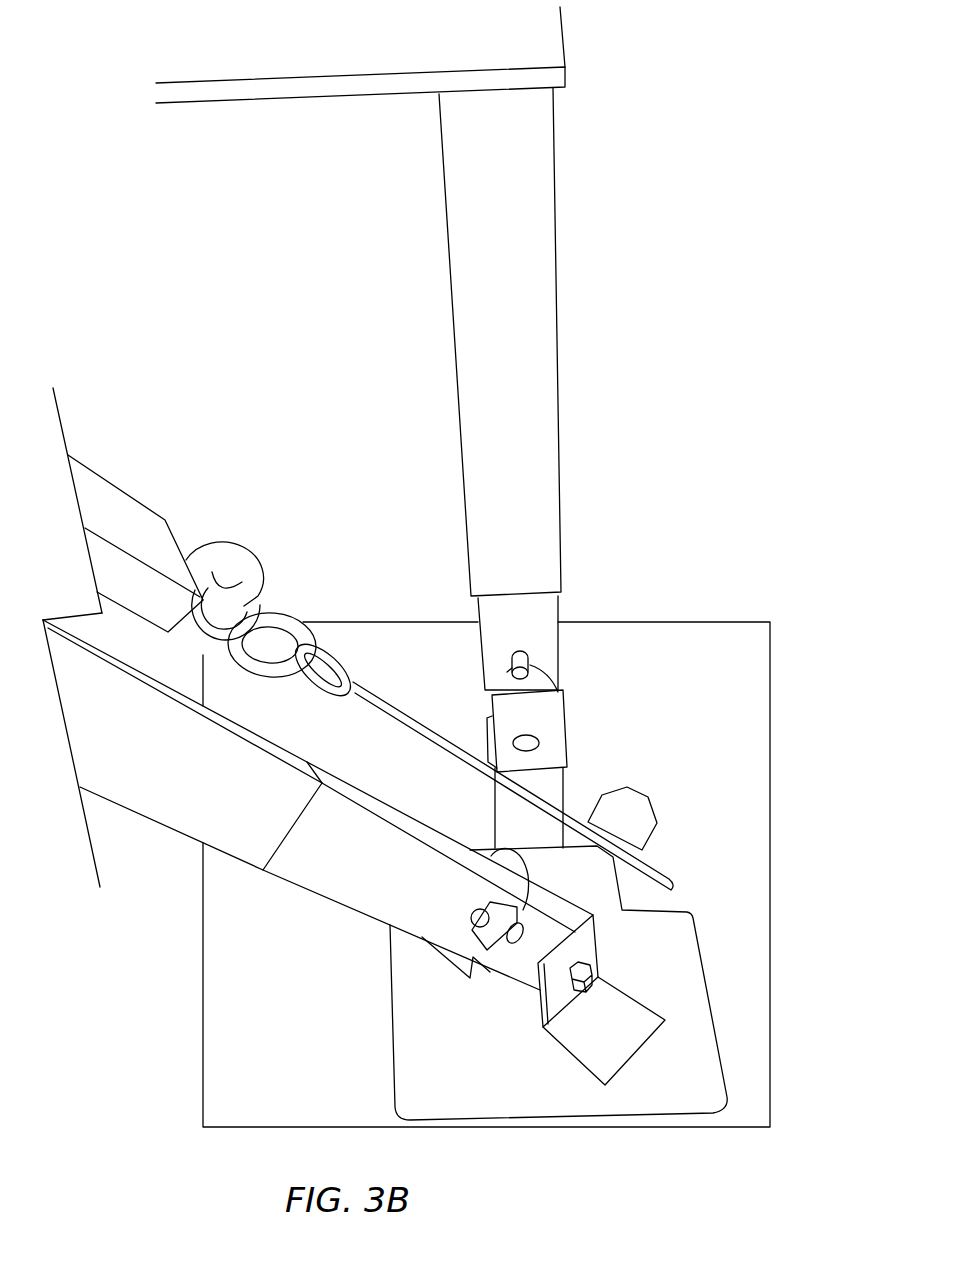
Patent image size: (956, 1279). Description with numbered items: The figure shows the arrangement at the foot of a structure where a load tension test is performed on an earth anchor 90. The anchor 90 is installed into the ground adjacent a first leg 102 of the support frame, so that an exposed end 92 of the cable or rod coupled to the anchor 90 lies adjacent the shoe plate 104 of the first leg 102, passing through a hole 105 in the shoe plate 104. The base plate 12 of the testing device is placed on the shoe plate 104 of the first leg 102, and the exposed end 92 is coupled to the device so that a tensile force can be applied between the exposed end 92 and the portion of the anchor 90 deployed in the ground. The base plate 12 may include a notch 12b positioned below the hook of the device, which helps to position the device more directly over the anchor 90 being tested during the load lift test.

The base plate 12 is at (705, 1070).
The notch 12b is at (640, 907).
The earth anchor 90 is at (655, 867).
The exposed end 92 is at (337, 640).
The first leg 102 is at (540, 292).
The shoe plate 104 is at (653, 628).
The hole 105 is at (640, 785).